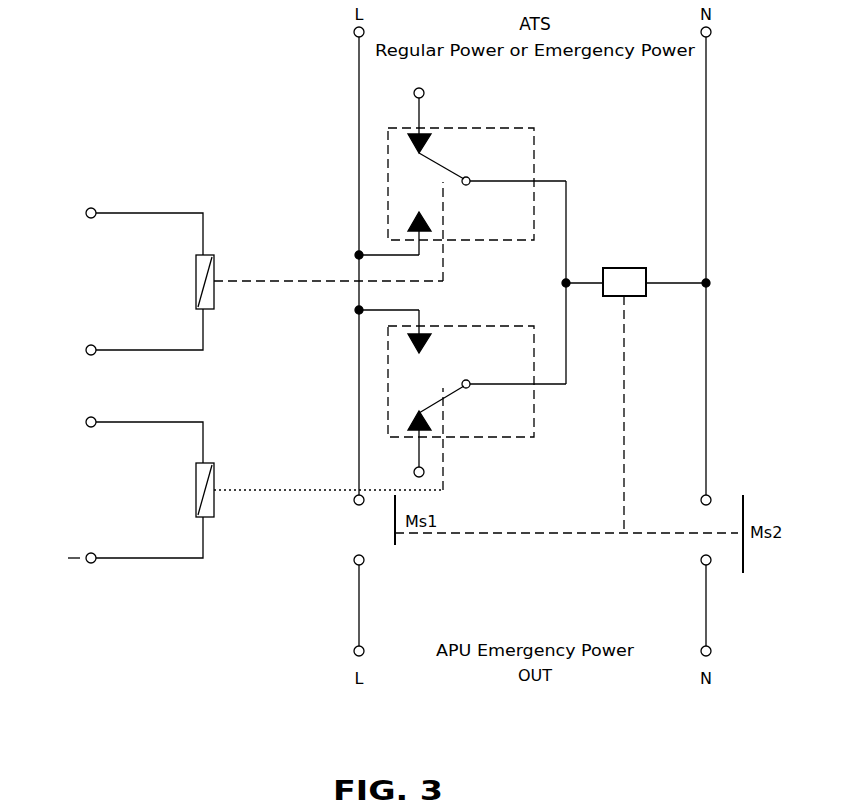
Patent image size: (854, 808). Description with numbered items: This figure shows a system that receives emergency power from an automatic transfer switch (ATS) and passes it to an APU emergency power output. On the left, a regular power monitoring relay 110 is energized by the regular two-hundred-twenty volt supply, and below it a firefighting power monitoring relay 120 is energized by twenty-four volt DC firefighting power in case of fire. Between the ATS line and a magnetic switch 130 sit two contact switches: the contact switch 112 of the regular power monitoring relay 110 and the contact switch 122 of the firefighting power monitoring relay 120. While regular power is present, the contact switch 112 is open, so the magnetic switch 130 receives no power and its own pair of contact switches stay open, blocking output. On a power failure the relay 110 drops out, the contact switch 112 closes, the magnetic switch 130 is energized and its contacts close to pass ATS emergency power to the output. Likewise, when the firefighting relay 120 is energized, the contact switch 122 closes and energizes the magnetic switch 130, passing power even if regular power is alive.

The regular power monitoring relay 110 is at (215, 297).
The firefighting power monitoring relay 120 is at (215, 506).
The contact switch of the regular power monitoring relay 112 is at (535, 155).
The contact switch of the firefighting power monitoring relay 122 is at (535, 410).
The magnetic switch 130 is at (625, 265).